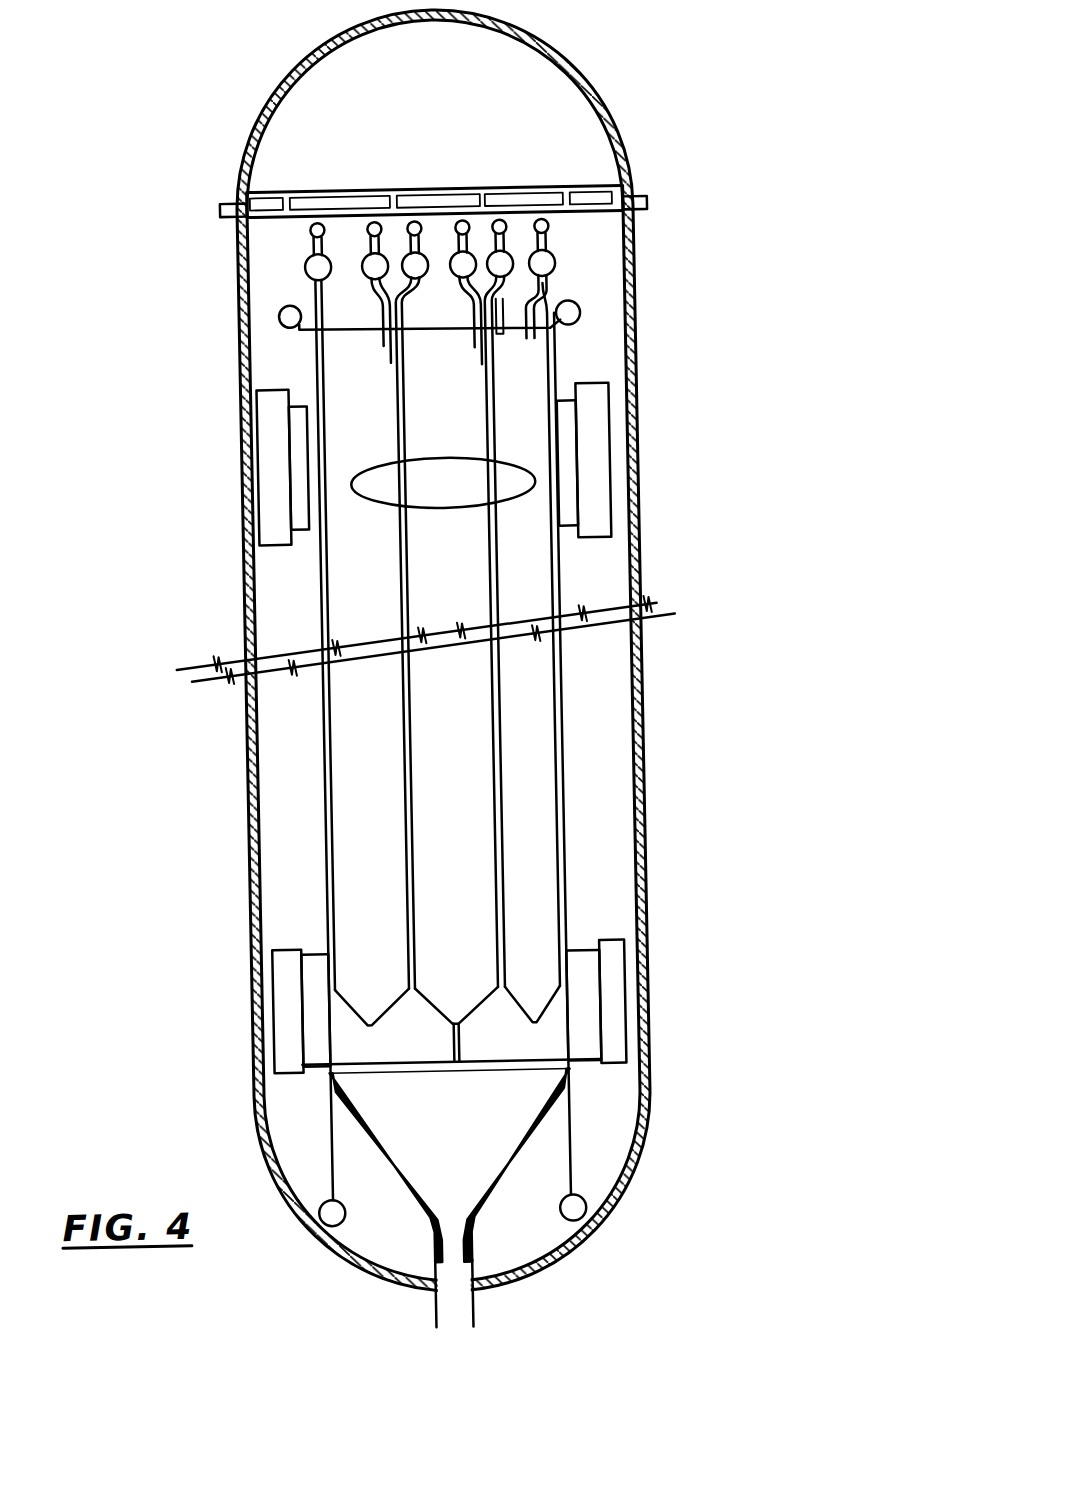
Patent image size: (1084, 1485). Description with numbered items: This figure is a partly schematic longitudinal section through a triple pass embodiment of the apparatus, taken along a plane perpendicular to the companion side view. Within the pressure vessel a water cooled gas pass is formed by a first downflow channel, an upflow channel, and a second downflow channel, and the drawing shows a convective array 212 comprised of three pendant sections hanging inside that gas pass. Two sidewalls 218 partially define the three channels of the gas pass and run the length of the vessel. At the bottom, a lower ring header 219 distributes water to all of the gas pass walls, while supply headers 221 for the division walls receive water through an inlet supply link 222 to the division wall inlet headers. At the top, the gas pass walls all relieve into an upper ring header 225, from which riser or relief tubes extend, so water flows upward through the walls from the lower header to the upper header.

The convective array 212 is at (530, 484).
The sidewalls 218 is at (552, 778).
The lower ring header 219 is at (566, 1203).
The supply headers for division walls 221 is at (599, 960).
The inlet supply link to the division wall inlet headers 222 is at (600, 1001).
The upper ring header 225 is at (574, 305).